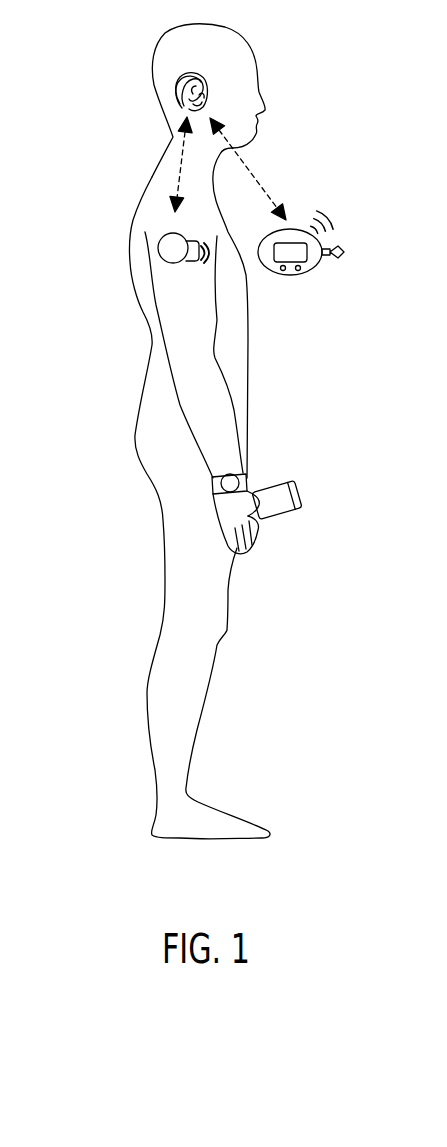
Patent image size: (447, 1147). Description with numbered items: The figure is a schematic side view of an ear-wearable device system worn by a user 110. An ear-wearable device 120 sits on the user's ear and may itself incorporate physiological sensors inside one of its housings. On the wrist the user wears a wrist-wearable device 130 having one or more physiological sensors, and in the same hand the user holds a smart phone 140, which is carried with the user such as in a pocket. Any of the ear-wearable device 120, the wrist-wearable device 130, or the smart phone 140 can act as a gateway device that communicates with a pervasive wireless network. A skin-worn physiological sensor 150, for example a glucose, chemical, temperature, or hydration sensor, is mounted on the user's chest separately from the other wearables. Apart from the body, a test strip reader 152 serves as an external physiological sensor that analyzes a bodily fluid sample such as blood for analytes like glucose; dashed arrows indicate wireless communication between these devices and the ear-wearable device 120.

The user 110 is at (148, 183).
The ear-wearable device 120 is at (178, 99).
The wrist-wearable device 130 is at (212, 478).
The smart phone 140 is at (278, 482).
The skin-worn physiological sensor 150 is at (173, 257).
The test strip reader 152 is at (287, 276).